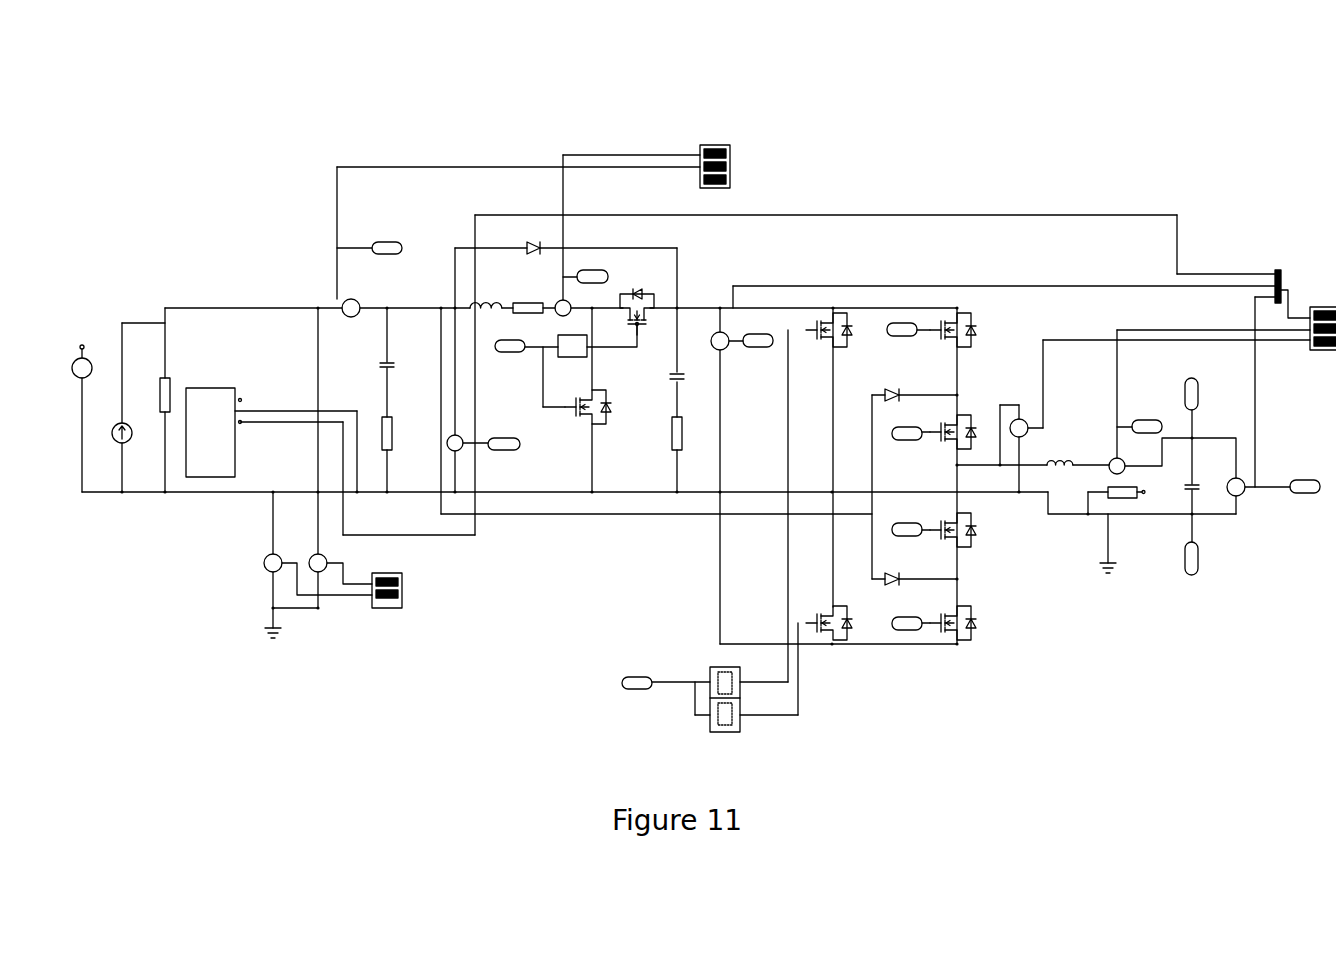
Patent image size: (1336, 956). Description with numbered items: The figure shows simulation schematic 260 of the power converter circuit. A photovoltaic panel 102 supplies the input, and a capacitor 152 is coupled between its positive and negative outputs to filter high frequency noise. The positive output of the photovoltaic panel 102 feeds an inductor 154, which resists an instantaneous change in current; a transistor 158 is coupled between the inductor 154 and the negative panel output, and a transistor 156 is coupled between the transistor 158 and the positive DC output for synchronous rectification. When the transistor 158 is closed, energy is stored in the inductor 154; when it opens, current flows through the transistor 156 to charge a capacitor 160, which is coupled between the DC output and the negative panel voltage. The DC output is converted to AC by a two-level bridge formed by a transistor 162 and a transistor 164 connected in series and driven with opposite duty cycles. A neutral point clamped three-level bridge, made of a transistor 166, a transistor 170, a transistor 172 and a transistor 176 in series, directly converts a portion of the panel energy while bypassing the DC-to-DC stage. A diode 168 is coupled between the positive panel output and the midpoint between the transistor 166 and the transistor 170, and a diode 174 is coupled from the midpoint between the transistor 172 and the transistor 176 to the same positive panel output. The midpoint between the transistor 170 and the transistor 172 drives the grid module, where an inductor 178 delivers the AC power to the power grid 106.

The simulation schematic 260 is at (262, 138).
The photovoltaic panel 102 is at (220, 388).
The capacitor 152 is at (400, 368).
The inductor 154 is at (484, 302).
The transistor 156 is at (651, 293).
The transistor 158 is at (608, 400).
The capacitor 160 is at (662, 376).
The transistor 162 is at (848, 312).
The transistor 164 is at (848, 641).
The transistor 166 is at (978, 330).
The diode 168 is at (893, 382).
The transistor 170 is at (963, 407).
The transistor 172 is at (972, 512).
The diode 174 is at (877, 587).
The transistor 176 is at (972, 613).
The inductor 178 is at (1052, 457).
The power grid 106 is at (1137, 497).